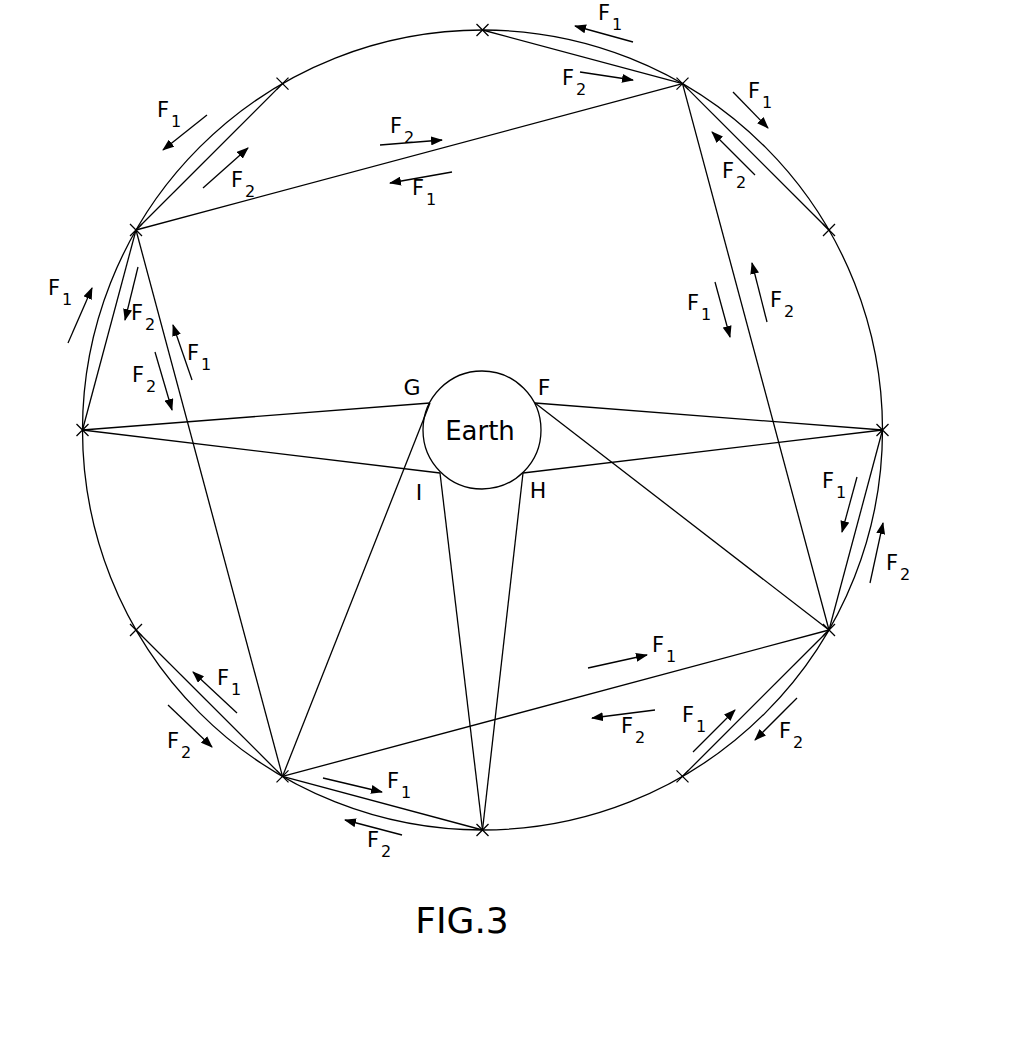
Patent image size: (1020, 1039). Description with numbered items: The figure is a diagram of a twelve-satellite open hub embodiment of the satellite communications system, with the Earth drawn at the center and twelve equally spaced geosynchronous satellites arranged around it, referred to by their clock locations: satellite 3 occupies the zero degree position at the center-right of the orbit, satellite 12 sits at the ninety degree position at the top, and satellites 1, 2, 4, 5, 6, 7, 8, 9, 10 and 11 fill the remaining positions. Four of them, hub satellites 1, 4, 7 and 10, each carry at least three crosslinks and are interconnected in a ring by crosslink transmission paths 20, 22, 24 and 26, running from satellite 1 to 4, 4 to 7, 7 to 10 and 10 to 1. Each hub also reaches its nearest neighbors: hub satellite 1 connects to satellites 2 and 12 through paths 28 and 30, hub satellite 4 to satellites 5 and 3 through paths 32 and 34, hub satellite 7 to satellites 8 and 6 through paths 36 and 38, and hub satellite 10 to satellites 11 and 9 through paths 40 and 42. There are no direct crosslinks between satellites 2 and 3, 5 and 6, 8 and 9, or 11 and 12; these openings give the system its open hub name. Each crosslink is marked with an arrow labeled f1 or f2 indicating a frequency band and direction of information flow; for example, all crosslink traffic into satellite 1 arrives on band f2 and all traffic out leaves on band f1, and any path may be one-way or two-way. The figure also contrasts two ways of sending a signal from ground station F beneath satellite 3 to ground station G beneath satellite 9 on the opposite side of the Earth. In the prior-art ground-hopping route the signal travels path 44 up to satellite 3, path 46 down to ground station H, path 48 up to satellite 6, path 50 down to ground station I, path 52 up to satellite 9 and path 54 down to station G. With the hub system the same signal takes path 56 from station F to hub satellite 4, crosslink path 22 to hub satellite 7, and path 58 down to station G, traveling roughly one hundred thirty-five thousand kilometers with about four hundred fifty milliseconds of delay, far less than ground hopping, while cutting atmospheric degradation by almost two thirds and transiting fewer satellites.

The hub satellite 1 is at (695, 69).
The satellite 2 is at (841, 215).
The satellite 3 is at (897, 430).
The hub satellite 4 is at (840, 643).
The satellite 5 is at (694, 789).
The satellite 6 is at (480, 846).
The hub satellite 7 is at (275, 794).
The satellite 8 is at (123, 643).
The satellite 9 is at (67, 434).
The hub satellite 10 is at (120, 216).
The satellite 11 is at (270, 70).
The satellite 12 is at (480, 18).
The crosslink transmission path 20 is at (762, 382).
The crosslink transmission path 22 is at (541, 706).
The crosslink transmission path 24 is at (198, 528).
The crosslink transmission path 26 is at (482, 139).
The crosslink path 28 is at (785, 187).
The crosslink path 30 is at (525, 43).
The crosslink path 32 is at (803, 655).
The crosslink path 34 is at (840, 593).
The crosslink path 36 is at (168, 663).
The crosslink path 38 is at (453, 822).
The crosslink path 40 is at (247, 117).
The crosslink path 42 is at (98, 366).
The path 44 is at (693, 420).
The path 46 is at (690, 458).
The path 48 is at (510, 625).
The path 50 is at (452, 592).
The path 52 is at (298, 460).
The path 54 is at (288, 412).
The path 56 is at (683, 523).
The path 58 is at (355, 585).